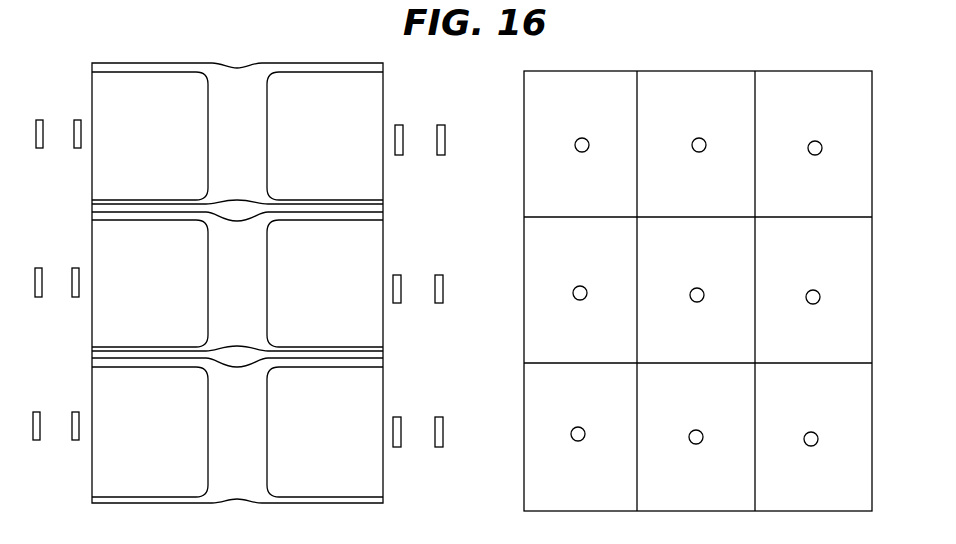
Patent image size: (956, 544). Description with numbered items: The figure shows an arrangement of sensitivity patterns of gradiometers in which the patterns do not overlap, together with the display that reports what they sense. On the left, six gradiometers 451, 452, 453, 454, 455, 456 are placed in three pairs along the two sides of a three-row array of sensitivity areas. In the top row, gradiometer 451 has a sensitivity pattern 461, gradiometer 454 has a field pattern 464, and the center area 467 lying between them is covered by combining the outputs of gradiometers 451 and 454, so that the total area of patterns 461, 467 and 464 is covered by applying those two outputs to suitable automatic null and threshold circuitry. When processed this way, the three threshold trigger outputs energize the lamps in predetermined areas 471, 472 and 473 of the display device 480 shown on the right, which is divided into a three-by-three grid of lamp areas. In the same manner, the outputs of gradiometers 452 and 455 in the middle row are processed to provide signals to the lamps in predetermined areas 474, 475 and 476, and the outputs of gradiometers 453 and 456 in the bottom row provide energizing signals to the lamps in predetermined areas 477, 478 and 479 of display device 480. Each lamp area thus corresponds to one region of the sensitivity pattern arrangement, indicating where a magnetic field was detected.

The gradiometer 451 is at (57, 152).
The gradiometer 452 is at (60, 300).
The gradiometer 453 is at (57, 442).
The gradiometer 454 is at (424, 152).
The gradiometer 455 is at (420, 305).
The gradiometer 456 is at (420, 448).
The sensitivity pattern 461 is at (172, 154).
The field pattern 464 is at (343, 157).
The center area 467 is at (258, 143).
The predetermined area 471 is at (592, 121).
The predetermined area 472 is at (718, 122).
The predetermined area 473 is at (828, 130).
The predetermined area 474 is at (596, 268).
The predetermined area 475 is at (712, 269).
The predetermined area 476 is at (826, 266).
The predetermined area 477 is at (598, 408).
The predetermined area 478 is at (706, 405).
The predetermined area 479 is at (826, 410).
The display device 480 is at (745, 72).